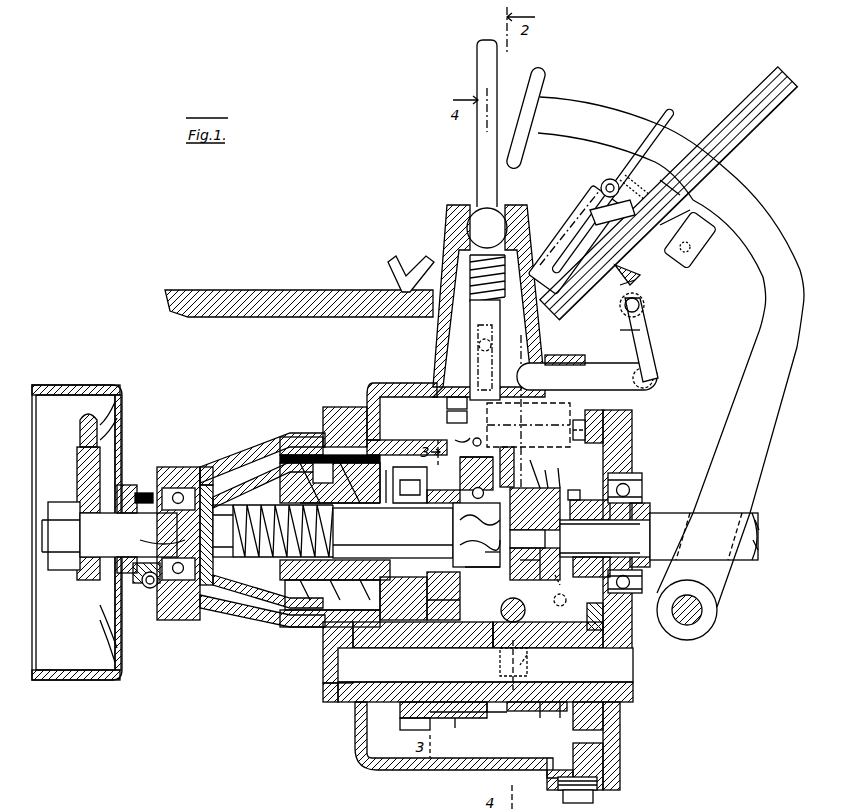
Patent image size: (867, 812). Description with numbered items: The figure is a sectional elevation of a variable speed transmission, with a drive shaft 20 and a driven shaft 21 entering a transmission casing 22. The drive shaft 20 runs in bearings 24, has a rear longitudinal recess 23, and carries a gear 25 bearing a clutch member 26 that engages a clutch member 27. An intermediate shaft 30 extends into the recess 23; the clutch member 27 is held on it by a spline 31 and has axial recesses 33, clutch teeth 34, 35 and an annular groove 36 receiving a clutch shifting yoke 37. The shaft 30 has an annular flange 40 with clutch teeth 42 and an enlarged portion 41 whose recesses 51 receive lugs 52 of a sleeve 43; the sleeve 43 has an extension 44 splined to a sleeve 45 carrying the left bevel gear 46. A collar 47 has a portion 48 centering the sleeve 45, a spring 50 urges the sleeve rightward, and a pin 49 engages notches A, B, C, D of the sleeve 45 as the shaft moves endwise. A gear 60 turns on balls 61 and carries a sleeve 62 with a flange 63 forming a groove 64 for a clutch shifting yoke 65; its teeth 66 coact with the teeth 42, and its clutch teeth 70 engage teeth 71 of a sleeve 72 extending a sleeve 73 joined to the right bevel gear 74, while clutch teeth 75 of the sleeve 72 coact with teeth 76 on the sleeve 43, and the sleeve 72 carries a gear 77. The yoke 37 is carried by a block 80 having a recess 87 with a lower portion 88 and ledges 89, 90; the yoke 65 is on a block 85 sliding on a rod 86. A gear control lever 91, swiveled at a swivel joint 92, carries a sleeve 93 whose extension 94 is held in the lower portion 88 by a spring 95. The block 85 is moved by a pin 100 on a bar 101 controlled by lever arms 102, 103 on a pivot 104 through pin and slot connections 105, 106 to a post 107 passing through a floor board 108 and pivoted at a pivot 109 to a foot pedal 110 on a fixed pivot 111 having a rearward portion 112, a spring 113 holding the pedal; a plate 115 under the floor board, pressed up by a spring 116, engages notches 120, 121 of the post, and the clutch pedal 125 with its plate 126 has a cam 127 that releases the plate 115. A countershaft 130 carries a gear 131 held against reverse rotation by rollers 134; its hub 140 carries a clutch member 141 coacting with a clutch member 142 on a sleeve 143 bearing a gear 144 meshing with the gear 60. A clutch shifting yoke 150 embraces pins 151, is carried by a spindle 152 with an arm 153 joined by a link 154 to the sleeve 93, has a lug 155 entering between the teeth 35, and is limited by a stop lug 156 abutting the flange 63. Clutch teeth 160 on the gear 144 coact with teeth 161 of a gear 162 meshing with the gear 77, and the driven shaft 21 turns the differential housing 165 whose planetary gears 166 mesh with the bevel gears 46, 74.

The drive shaft 20 is at (752, 518).
The driven shaft 21 is at (116, 522).
The transmission casing 22 is at (375, 771).
The longitudinal recess 23 is at (640, 508).
The bearings 24 is at (632, 488).
The gear 25 is at (632, 458).
The clutch member 26 is at (580, 498).
The clutch member 27 is at (548, 473).
The intermediate shaft 30 is at (640, 575).
The spline 31 is at (564, 485).
The axially extending recesses 33 is at (563, 471).
The clutch teeth 34 is at (539, 466).
The clutch teeth 35 is at (525, 608).
The annular groove 36 is at (535, 518).
The clutch shifting yoke 37 is at (535, 560).
The annular flange 40 is at (493, 552).
The enlarged portion 41 is at (455, 528).
The clutch teeth 42 is at (497, 440).
The sleeve 43 is at (443, 596).
The extension 44 is at (392, 505).
The sleeve 45 is at (332, 595).
The bevel gear 46 is at (232, 466).
The collar 47 is at (195, 600).
The portion 48 is at (240, 575).
The pin 49 is at (202, 525).
The spring 50 is at (298, 580).
The recesses 51 is at (476, 534).
The radially extending lugs 52 is at (480, 541).
The gear 60 is at (465, 459).
The balls 61 is at (470, 470).
The sleeve 62 is at (472, 628).
The flange 63 is at (513, 467).
The annular groove 64 is at (490, 630).
The clutch shifting yoke 65 is at (458, 433).
The clutch teeth 66 is at (482, 563).
The clutch teeth 70 is at (448, 628).
The teeth 71 is at (443, 603).
The sleeve 72 is at (410, 486).
The sleeve 73 is at (405, 505).
The bevel gear 74 is at (382, 590).
The clutch teeth 75 is at (425, 565).
The clutch teeth 76 is at (443, 489).
The gear 77 is at (378, 440).
The block 80 is at (447, 405).
The block 85 is at (570, 397).
The rod 86 is at (593, 410).
The recess 87 is at (447, 420).
The lower portion 88 is at (477, 435).
The elevated ledge 89 is at (428, 382).
The elevated ledge 90 is at (523, 412).
The gear control lever 91 is at (477, 152).
The swivel joint 92 is at (470, 210).
The sleeve 93 is at (472, 292).
The reduced extension 94 is at (468, 398).
The spring 95 is at (447, 245).
The pin 100 is at (555, 368).
The bar 101 is at (598, 365).
The lever arm 102 is at (648, 322).
The lever arm 103 is at (662, 280).
The pivot 104 is at (645, 304).
The pin and slot connection 105 is at (655, 375).
The pin and slot connection 106 is at (692, 250).
The post 107 is at (690, 232).
The floor board 108 is at (748, 140).
The pivot 109 is at (600, 184).
The foot pedal 110 is at (660, 110).
The fixed pivot 111 is at (545, 262).
The rearwardly extending portion 112 is at (398, 258).
The spring 113 is at (602, 212).
The plate 115 is at (688, 215).
The spring 116 is at (636, 275).
The notch 120 is at (670, 175).
The notch 121 is at (645, 185).
The clutch pedal 125 is at (578, 115).
The plate 126 is at (542, 68).
The cam 127 is at (700, 200).
The countershaft 130 is at (330, 670).
The gear 131 is at (620, 745).
The rollers or balls 134 is at (603, 615).
The hub or sleeve 140 is at (562, 718).
The clutch member 141 is at (541, 716).
The clutch member 142 is at (522, 714).
The sleeve 143 is at (500, 712).
The gear 144 is at (436, 751).
The clutch shifting yoke 150 is at (520, 672).
The pins 151 is at (500, 672).
The spindle 152 is at (548, 564).
The arm 153 is at (560, 588).
The link 154 is at (575, 540).
The lug 155 is at (534, 654).
The stop lug 156 is at (525, 558).
The clutch teeth 160 is at (453, 720).
The clutch teeth 161 is at (420, 712).
The gear 162 is at (400, 724).
The differential housing 165 is at (275, 455).
The planetary gears 166 is at (293, 455).
The notch A is at (155, 547).
The notch B is at (214, 535).
The notch C is at (240, 495).
The notch D is at (203, 478).